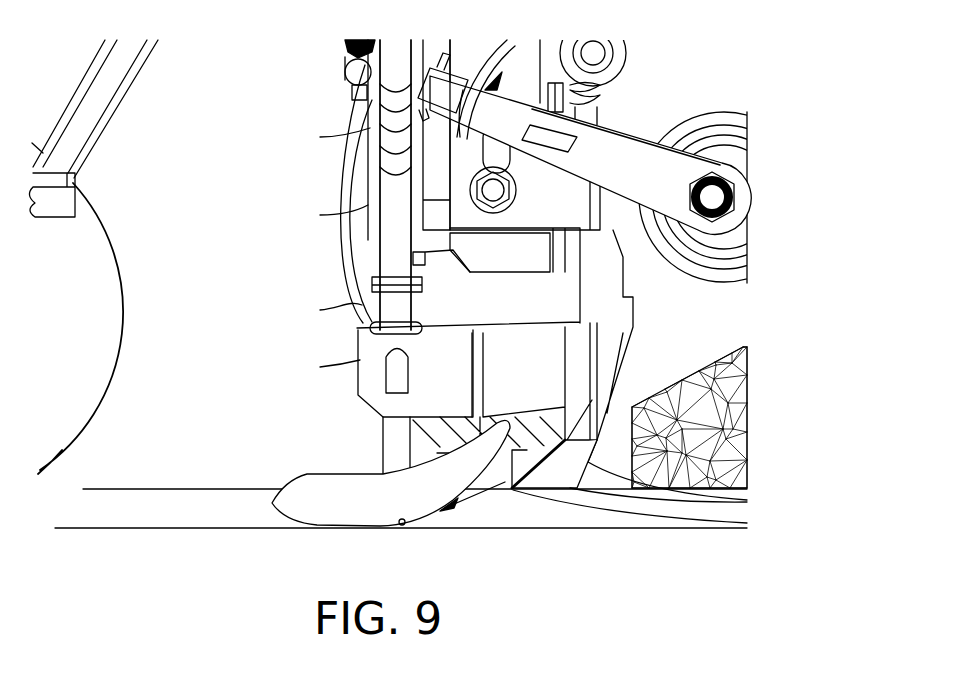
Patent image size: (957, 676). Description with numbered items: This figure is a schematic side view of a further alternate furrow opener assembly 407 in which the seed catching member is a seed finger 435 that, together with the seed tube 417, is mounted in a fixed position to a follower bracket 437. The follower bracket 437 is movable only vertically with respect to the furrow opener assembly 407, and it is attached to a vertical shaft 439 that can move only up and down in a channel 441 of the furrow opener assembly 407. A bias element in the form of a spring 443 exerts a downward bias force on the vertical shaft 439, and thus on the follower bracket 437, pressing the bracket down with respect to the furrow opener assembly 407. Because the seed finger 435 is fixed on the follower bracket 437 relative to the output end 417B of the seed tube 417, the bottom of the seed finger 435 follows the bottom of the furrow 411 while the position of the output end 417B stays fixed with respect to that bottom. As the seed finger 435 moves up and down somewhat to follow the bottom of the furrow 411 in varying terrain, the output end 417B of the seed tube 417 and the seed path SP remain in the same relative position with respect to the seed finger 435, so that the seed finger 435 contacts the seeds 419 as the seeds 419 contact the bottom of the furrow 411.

The furrow opener assembly 407 is at (652, 92).
The furrow 411 is at (207, 500).
The seed tube 417 is at (533, 413).
The output end of the seed tube 417B is at (512, 490).
The seeds 419 is at (400, 528).
The seed finger 435 is at (337, 473).
The follower bracket 437 is at (357, 365).
The vertical shaft 439 is at (377, 305).
The channel 441 is at (383, 210).
The spring 443 is at (390, 142).
The seed path SP is at (480, 500).